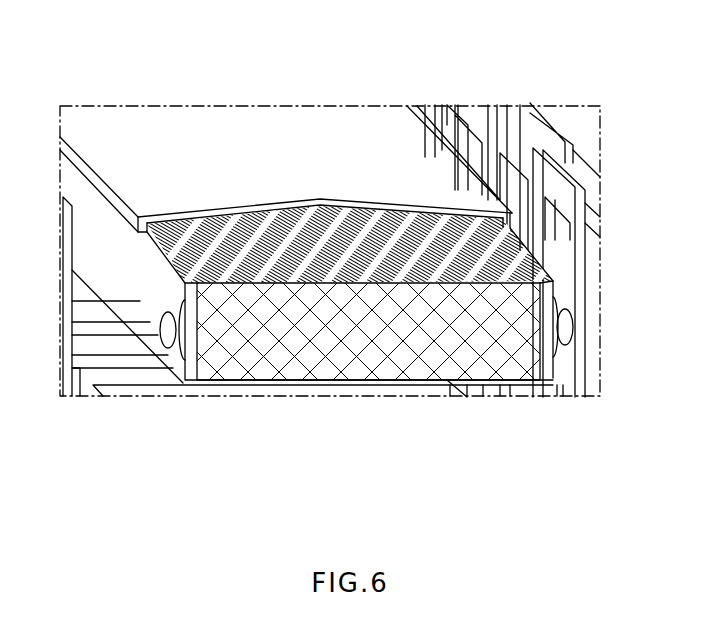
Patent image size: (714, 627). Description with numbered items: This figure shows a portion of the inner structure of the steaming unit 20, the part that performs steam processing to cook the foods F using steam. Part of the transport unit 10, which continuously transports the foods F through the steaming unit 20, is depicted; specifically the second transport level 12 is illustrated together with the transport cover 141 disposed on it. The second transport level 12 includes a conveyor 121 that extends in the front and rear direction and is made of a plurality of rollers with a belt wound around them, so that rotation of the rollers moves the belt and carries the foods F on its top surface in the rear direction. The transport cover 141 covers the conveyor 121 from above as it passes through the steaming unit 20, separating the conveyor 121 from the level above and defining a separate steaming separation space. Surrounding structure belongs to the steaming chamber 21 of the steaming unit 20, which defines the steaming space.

The transport unit 10 is at (481, 93).
The second transport level 12 is at (573, 298).
The conveyor 121 is at (427, 352).
The transport cover 141 is at (358, 182).
The steaming unit 20 is at (613, 200).
The steaming chamber 21 is at (523, 131).
The foods F is at (196, 263).